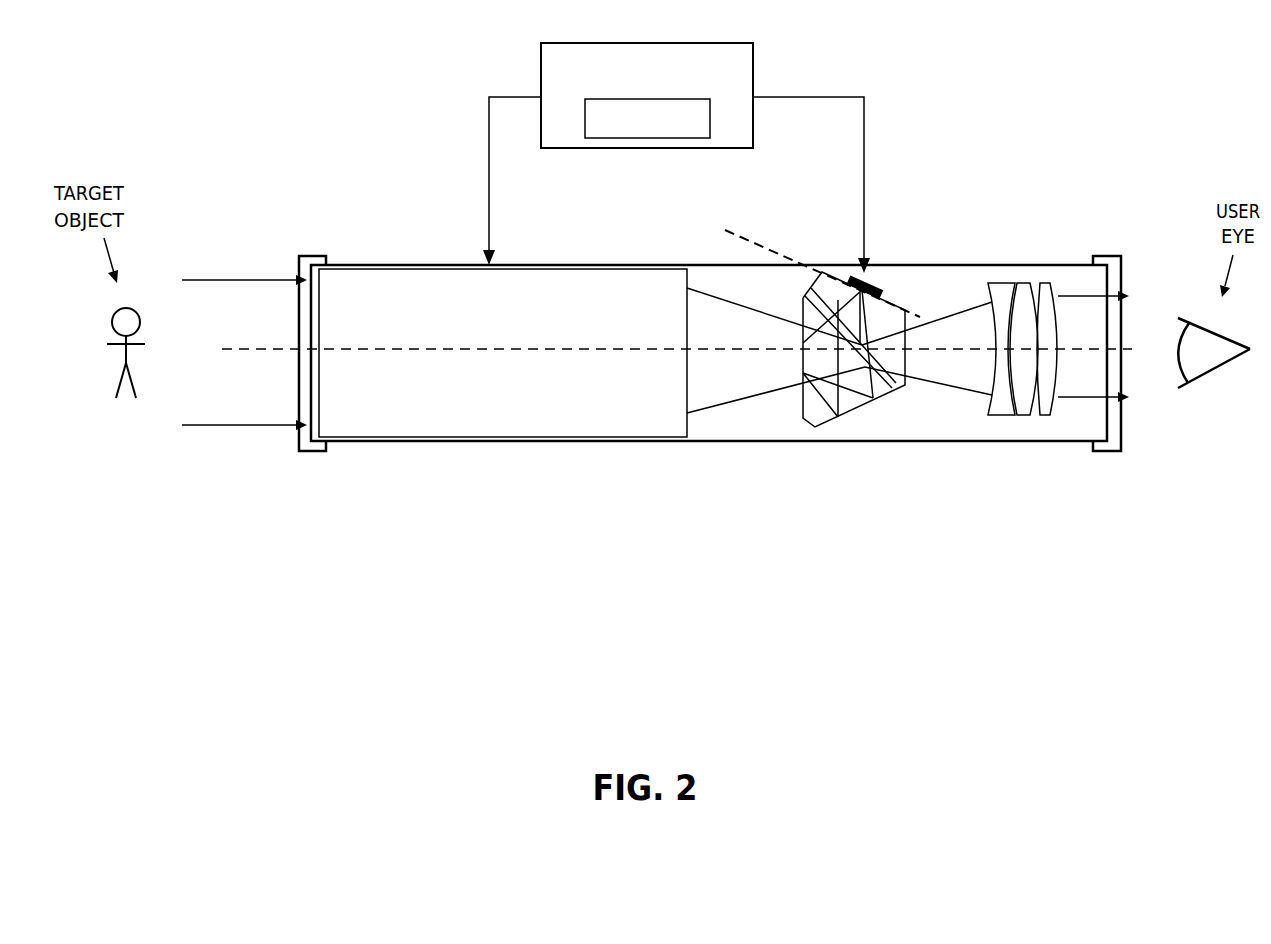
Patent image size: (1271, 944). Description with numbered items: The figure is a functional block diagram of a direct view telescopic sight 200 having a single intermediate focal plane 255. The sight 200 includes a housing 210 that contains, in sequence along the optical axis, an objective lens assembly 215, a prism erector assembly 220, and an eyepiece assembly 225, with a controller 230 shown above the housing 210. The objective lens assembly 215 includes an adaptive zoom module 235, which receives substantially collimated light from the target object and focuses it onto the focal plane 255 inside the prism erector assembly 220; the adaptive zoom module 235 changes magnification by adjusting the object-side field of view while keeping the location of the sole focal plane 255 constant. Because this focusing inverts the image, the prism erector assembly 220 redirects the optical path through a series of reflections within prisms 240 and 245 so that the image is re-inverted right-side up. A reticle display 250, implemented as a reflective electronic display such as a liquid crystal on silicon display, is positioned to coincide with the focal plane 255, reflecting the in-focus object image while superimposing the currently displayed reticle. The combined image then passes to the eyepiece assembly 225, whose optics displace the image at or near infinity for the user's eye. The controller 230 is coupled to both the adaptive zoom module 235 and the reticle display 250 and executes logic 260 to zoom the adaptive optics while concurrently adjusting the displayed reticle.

The direct view telescopic sight 200 is at (252, 91).
The housing 210 is at (1028, 265).
The objective lens assembly 215 is at (315, 468).
The prism erector assembly 220 is at (923, 468).
The eyepiece assembly 225 is at (983, 468).
The controller 230 is at (730, 81).
The adaptive zoom module 235 is at (482, 336).
The prism 240 is at (800, 318).
The prism 245 is at (903, 310).
The reticle display 250 is at (890, 297).
The focal plane 255 is at (777, 250).
The logic 260 is at (695, 130).